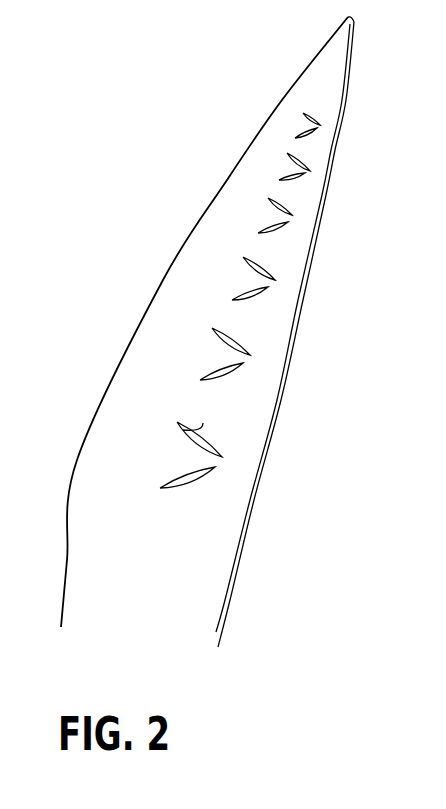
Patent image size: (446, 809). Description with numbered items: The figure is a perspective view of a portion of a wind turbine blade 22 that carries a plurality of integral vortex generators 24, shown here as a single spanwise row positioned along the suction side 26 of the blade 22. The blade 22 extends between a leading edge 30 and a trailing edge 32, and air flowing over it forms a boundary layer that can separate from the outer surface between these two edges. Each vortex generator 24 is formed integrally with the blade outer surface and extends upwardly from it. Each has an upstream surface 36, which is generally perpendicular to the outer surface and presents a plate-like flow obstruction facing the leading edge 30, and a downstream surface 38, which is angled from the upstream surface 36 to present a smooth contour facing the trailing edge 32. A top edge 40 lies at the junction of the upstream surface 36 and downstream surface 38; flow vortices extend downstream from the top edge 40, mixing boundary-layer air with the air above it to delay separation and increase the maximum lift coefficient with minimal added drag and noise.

The wind turbine blade 22 is at (207, 332).
The integral vortex generator 24 is at (207, 313).
The suction side 26 is at (249, 212).
The leading edge 30 is at (308, 276).
The trailing edge 32 is at (133, 327).
The upstream surface 36 is at (182, 476).
The downstream surface 38 is at (177, 434).
The top edge 40 is at (203, 424).